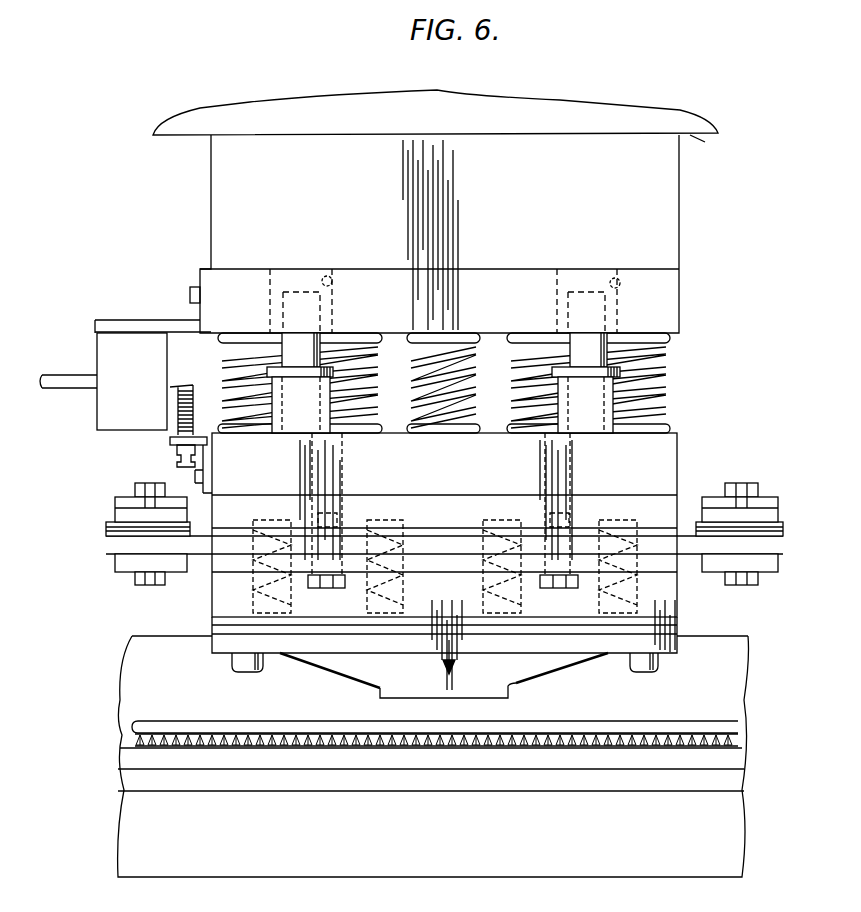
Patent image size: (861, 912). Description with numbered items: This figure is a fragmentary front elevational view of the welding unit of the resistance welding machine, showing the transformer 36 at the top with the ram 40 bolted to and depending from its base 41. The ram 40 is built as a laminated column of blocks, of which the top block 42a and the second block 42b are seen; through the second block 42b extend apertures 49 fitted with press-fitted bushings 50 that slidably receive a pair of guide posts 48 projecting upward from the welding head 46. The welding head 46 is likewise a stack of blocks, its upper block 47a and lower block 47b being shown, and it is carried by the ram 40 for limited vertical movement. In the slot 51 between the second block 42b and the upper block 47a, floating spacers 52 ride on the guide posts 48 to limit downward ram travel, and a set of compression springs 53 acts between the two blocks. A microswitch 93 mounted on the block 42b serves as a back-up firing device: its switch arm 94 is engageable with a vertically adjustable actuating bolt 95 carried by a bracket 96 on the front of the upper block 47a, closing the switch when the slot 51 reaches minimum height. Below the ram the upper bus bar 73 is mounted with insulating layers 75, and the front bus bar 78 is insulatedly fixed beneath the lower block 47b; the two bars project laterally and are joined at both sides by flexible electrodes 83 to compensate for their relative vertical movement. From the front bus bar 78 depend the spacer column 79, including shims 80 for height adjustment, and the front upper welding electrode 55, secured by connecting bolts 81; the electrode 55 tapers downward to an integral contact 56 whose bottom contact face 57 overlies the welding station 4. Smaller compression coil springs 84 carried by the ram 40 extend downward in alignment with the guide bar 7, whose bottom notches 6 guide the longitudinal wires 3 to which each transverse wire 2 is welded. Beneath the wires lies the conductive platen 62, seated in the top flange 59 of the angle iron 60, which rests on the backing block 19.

The transformer 36 is at (442, 116).
The base 41 is at (707, 147).
The ram 40 is at (692, 211).
The top block 42a is at (525, 196).
The second block 42b is at (490, 308).
The bushing 50 is at (277, 290).
The aperture 49 is at (334, 278).
The microswitch 93 is at (172, 342).
The switch arm 94 is at (176, 384).
The actuating bolt 95 is at (175, 456).
The bracket 96 is at (208, 468).
The guide post 48 is at (311, 360).
The compression spring 53 is at (386, 380).
The slot 51 is at (502, 359).
The floating spacer 52 is at (311, 408).
The welding head 46 is at (688, 457).
The upper block 47a is at (469, 470).
The lower block 47b is at (469, 526).
The upper bus bar 73 is at (200, 530).
The flexible electrode 83 is at (106, 528).
The front bus bar 78 is at (110, 545).
The spacer column 79 is at (212, 597).
The compression coil spring 84 is at (606, 598).
The insulating layer 75 is at (538, 535).
The shim 80 is at (680, 633).
The connecting bolt 81 is at (238, 670).
The front upper welding electrode 55 is at (331, 679).
The contact 56 is at (510, 690).
The bottom contact face 57 is at (449, 678).
The guide bar 7 is at (694, 706).
The transverse wire 2 is at (168, 720).
The notch 6 is at (272, 735).
The longitudinal wire 3 is at (536, 746).
The welding station 4 is at (548, 717).
The platen 62 is at (435, 768).
The top flange 59 is at (664, 778).
The angle iron 60 is at (762, 783).
The backing block 19 is at (437, 836).